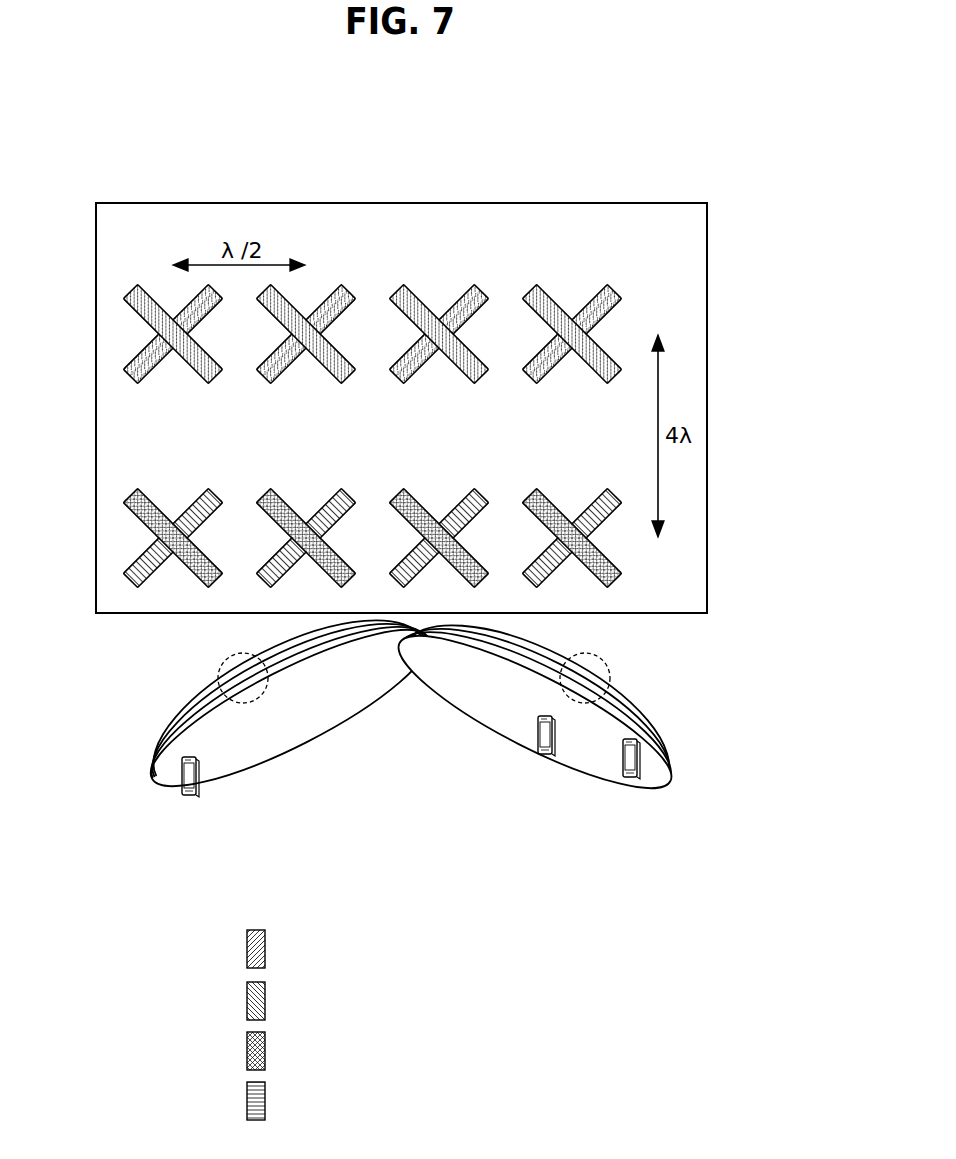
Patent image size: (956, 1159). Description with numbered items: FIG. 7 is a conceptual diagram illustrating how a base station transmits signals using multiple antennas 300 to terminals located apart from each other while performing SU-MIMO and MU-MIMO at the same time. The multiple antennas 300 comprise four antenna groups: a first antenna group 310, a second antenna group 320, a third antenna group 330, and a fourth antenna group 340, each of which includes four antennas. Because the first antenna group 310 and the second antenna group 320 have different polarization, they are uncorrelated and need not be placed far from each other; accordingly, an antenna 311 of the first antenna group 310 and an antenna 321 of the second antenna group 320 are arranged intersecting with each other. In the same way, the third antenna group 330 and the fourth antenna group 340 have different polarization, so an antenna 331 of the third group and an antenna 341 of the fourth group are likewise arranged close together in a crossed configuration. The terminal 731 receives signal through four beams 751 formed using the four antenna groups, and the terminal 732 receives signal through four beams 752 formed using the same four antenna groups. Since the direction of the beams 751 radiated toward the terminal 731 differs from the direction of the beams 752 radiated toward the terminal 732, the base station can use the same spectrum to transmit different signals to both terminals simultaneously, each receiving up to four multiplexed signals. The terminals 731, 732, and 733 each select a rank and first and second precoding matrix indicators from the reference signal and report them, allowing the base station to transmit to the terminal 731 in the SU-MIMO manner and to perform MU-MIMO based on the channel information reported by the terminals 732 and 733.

The multiple antennas 300 is at (707, 250).
The antenna of the first antenna group 311 is at (435, 303).
The antenna of the second antenna group 321 is at (440, 303).
The antenna of the third antenna group 331 is at (435, 507).
The antenna of the fourth antenna group 341 is at (440, 507).
The first antenna group 310 is at (518, 945).
The second antenna group 320 is at (518, 996).
The third antenna group 330 is at (518, 1047).
The fourth antenna group 340 is at (518, 1098).
The beams 751 is at (220, 668).
The beams 752 is at (602, 657).
The terminal 731 is at (186, 800).
The terminal 732 is at (628, 786).
The terminal 733 is at (542, 758).